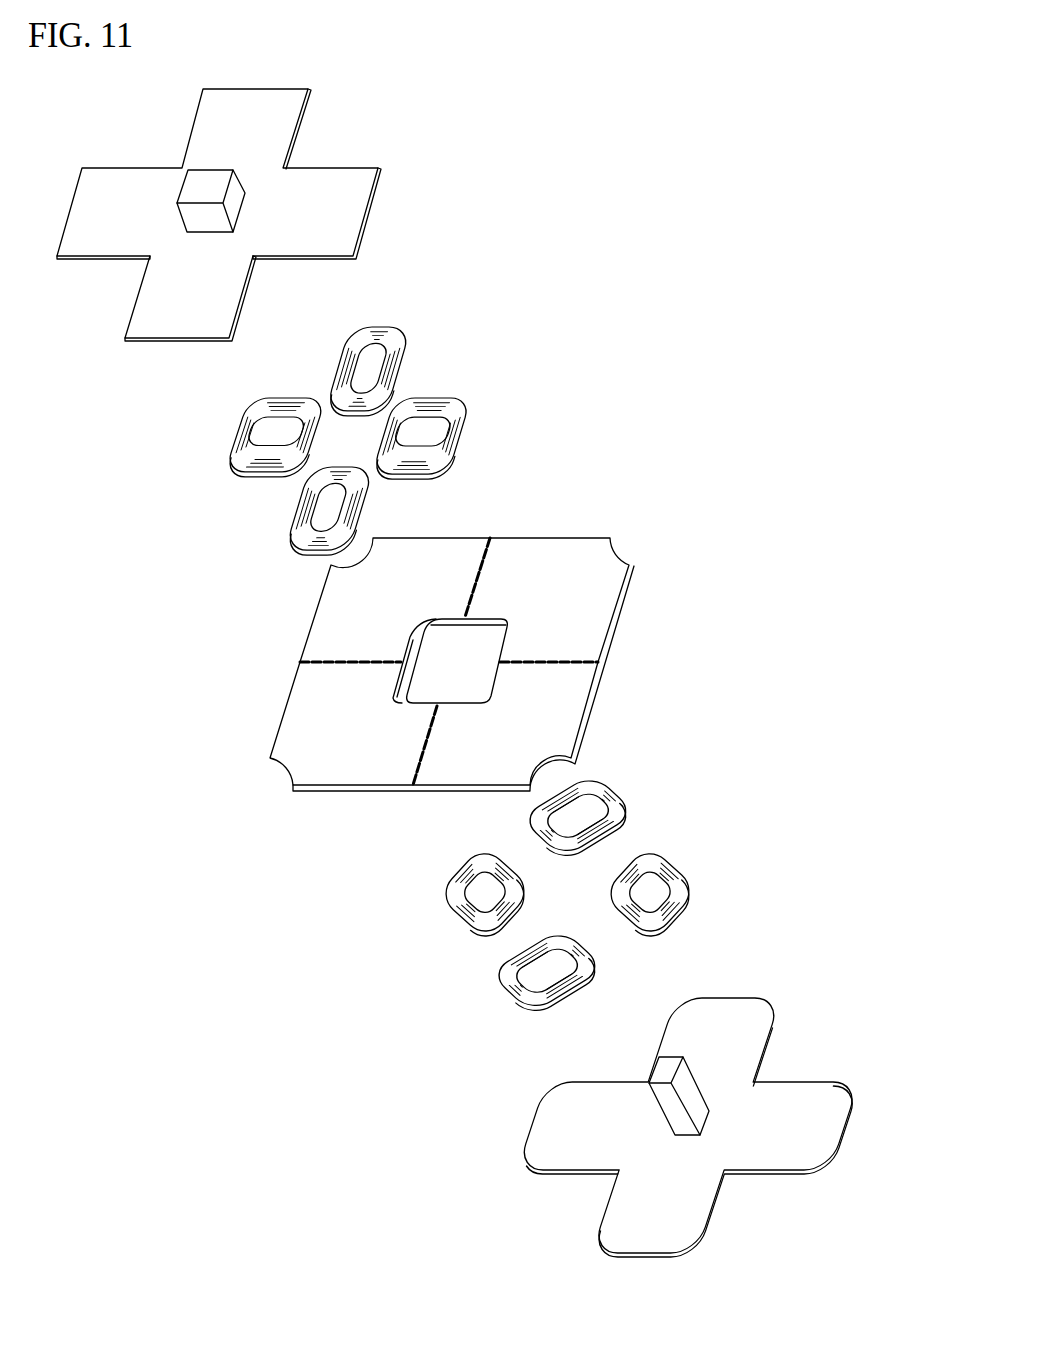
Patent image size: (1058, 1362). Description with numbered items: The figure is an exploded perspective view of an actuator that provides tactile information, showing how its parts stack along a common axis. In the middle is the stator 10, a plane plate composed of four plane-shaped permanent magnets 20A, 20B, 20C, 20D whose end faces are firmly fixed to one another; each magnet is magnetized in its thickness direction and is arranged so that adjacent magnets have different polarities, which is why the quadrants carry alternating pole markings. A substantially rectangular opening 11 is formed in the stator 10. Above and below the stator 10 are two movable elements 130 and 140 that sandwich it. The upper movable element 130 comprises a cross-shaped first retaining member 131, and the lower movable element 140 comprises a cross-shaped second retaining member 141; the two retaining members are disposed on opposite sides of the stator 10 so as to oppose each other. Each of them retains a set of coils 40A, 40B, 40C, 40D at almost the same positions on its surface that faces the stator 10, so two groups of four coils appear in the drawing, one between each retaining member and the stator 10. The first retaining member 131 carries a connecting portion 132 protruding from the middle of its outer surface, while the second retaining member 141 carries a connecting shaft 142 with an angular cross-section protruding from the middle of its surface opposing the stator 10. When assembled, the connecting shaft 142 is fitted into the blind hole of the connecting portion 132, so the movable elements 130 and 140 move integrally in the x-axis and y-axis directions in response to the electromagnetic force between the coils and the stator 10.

The stator 10 is at (482, 663).
The opening 11 is at (398, 702).
The permanent magnet 20A is at (557, 538).
The permanent magnet 20B is at (450, 785).
The permanent magnet 20C is at (318, 785).
The permanent magnet 20D is at (425, 538).
The coil 40A is at (407, 342).
The coil 40B is at (450, 403).
The coil 40C is at (312, 552).
The coil 40D is at (230, 432).
The movable element 130 is at (268, 215).
The first retaining member 131 is at (338, 177).
The connecting portion 132 is at (192, 172).
The movable element 140 is at (689, 1106).
The second retaining member 141 is at (802, 1093).
The connecting shaft 142 is at (690, 1097).